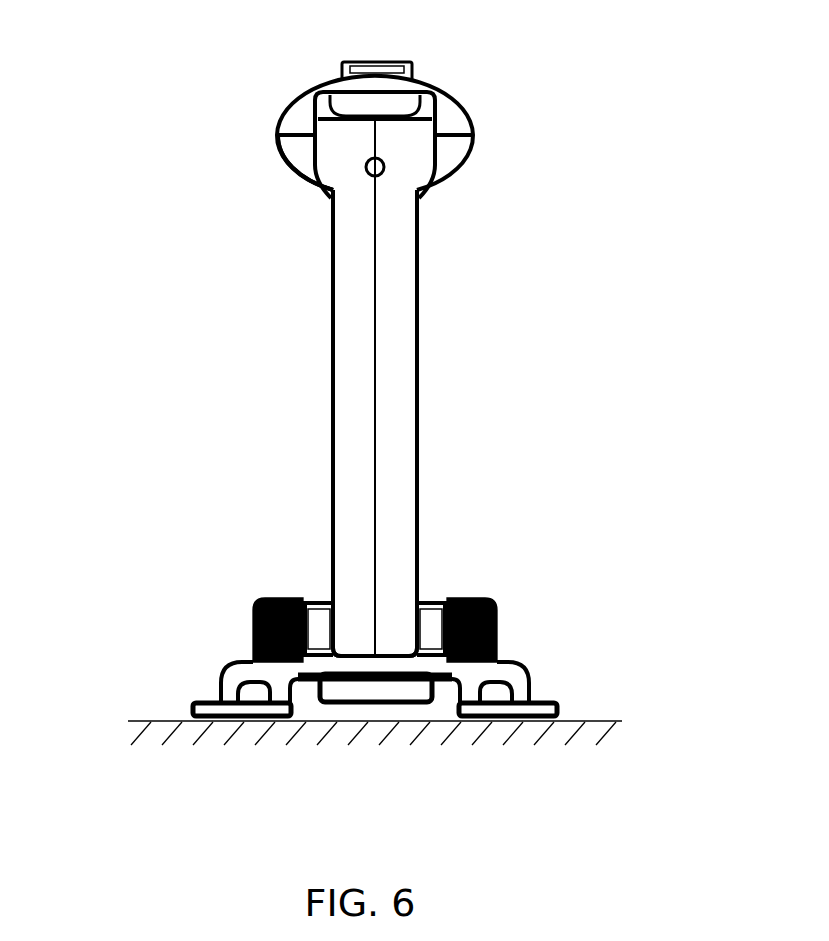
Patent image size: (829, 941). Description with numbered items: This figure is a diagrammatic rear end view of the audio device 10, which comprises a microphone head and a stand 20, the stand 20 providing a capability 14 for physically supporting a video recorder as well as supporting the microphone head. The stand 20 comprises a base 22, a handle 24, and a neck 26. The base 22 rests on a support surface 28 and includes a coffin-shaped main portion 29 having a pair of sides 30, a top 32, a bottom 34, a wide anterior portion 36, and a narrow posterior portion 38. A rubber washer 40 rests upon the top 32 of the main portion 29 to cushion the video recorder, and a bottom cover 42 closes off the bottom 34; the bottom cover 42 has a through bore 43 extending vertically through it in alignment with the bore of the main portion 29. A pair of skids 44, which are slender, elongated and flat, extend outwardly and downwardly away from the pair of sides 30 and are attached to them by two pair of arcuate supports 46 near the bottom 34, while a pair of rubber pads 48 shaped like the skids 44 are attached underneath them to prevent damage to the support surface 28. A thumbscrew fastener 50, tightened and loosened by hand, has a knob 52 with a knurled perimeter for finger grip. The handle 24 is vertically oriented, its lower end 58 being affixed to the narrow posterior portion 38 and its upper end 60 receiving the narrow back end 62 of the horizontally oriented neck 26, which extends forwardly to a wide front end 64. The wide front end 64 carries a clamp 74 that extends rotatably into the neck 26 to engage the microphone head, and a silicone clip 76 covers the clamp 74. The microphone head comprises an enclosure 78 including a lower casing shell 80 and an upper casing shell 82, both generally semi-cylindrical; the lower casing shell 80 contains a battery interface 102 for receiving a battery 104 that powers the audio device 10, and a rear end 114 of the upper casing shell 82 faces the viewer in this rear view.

The audio device 10 is at (263, 341).
The capability for physically supporting a video recorder 14 is at (409, 716).
The stand 20 is at (344, 343).
The base 22 is at (359, 689).
The handle 24 is at (331, 368).
The neck 26 is at (296, 86).
The support surface 28 is at (373, 744).
The main portion 29 is at (258, 604).
The pair of sides 30 is at (370, 607).
The top 32 is at (313, 600).
The bottom 34 is at (308, 680).
The wide anterior portion 36 is at (335, 722).
The narrow posterior portion 38 is at (418, 606).
The rubber washer 40 is at (282, 604).
The bottom cover 42 is at (375, 751).
The through bore 43 is at (377, 682).
The pair of skids 44 is at (208, 700).
The arcuate supports 46 is at (279, 687).
The pair of rubber pads 48 is at (244, 722).
The thumbscrew fastener 50 is at (376, 749).
The knob 52 is at (376, 714).
The lower end 58 is at (348, 643).
The upper end 60 is at (470, 192).
The narrow back end 62 is at (404, 162).
The wide front end 64 is at (365, 102).
The clamp 74 is at (343, 100).
The silicone clip 76 is at (408, 98).
The enclosure 78 is at (297, 117).
The lower casing shell 80 is at (293, 170).
The upper casing shell 82 is at (292, 127).
The battery interface 102 is at (244, 162).
The battery 104 is at (292, 158).
The rear end 114 is at (311, 102).